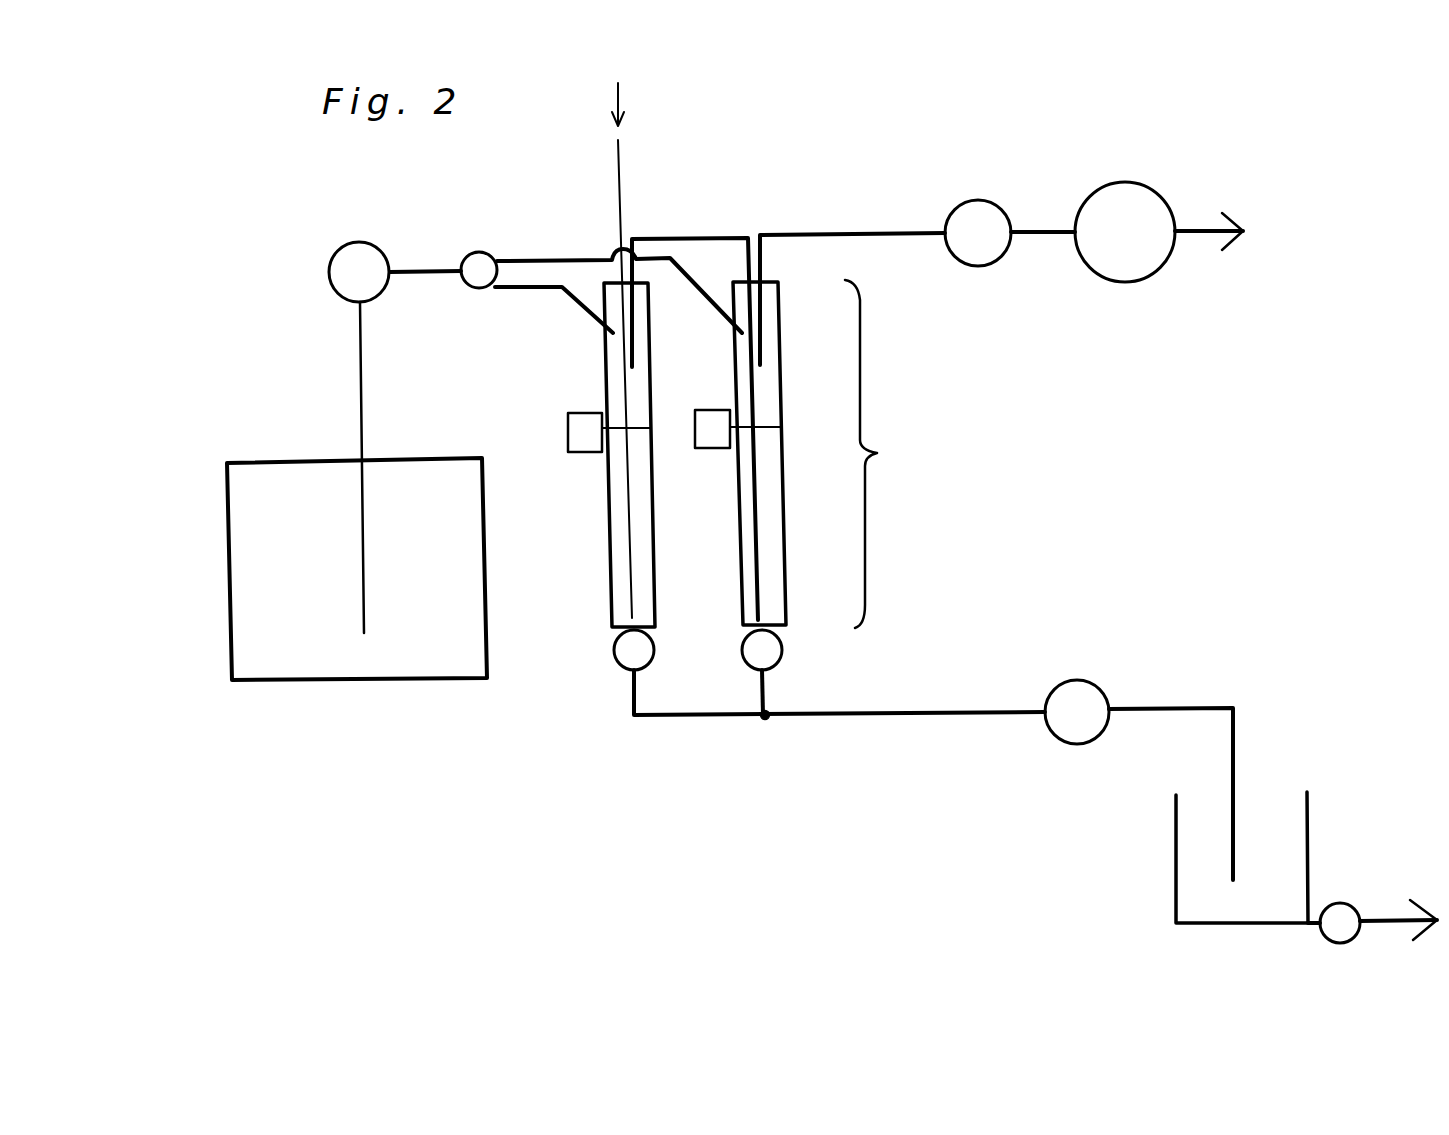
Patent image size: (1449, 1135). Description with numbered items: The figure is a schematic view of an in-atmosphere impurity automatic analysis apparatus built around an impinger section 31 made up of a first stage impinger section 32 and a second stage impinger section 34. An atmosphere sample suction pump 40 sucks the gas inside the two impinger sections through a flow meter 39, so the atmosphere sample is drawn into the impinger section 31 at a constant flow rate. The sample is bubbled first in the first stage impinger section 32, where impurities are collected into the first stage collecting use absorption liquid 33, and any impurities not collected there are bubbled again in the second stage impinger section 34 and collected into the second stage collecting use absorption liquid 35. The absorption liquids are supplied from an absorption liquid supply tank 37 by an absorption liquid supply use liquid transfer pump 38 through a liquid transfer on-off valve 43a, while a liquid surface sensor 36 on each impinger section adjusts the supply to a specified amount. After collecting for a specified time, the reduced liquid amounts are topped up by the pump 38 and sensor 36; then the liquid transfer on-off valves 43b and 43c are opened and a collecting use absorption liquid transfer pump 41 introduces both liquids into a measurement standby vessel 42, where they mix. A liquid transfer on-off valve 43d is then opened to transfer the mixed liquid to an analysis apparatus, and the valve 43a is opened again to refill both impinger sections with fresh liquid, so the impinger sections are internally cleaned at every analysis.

The impinger section 31 is at (887, 454).
The first stage impinger section 32 is at (604, 362).
The first stage collecting use absorption liquid 33 is at (612, 571).
The second stage impinger section 34 is at (781, 377).
The second stage collecting use absorption liquid 35 is at (743, 555).
The liquid surface sensor 36 is at (705, 408).
The absorption liquid supply tank 37 is at (227, 495).
The absorption liquid supply use liquid transfer pump 38 is at (362, 242).
The flow meter 39 is at (990, 265).
The atmosphere sample suction pump 40 is at (1157, 275).
The collecting use absorption liquid transfer pump 41 is at (1068, 680).
The measurement standby vessel 42 is at (1175, 867).
The liquid transfer on-off valve 43a is at (483, 249).
The liquid transfer on-off valve 43b is at (613, 655).
The liquid transfer on-off valve 43c is at (743, 652).
The liquid transfer on-off valve 43d is at (1350, 905).